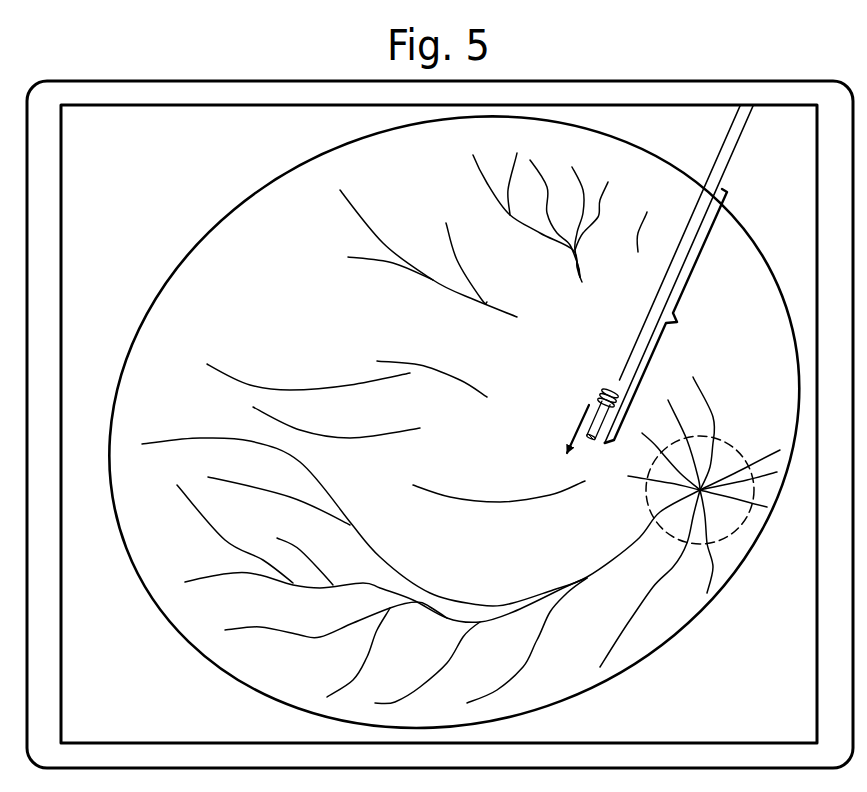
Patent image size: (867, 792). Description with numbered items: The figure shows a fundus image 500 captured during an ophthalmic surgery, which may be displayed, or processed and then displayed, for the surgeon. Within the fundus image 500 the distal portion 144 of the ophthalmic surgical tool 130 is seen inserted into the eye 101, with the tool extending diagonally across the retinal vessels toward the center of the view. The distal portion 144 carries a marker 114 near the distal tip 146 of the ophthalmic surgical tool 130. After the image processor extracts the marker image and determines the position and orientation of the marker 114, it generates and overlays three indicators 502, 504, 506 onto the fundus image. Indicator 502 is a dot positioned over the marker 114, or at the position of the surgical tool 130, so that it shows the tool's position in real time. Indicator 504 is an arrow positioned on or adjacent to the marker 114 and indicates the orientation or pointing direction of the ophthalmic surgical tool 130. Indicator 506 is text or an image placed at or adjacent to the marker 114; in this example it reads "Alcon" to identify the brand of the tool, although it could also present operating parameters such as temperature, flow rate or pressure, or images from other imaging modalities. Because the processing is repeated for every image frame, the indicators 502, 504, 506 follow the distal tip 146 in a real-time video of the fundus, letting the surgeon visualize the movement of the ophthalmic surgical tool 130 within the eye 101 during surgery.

The fundus image 500 is at (643, 76).
The eye 101 is at (245, 193).
The ophthalmic surgical tool 130 is at (749, 181).
The distal portion 144 is at (666, 316).
The marker 114 is at (613, 376).
The indicator 502 is at (597, 398).
The distal tip 146 is at (590, 443).
The indicator 504 is at (567, 437).
The indicator 506 is at (520, 418).